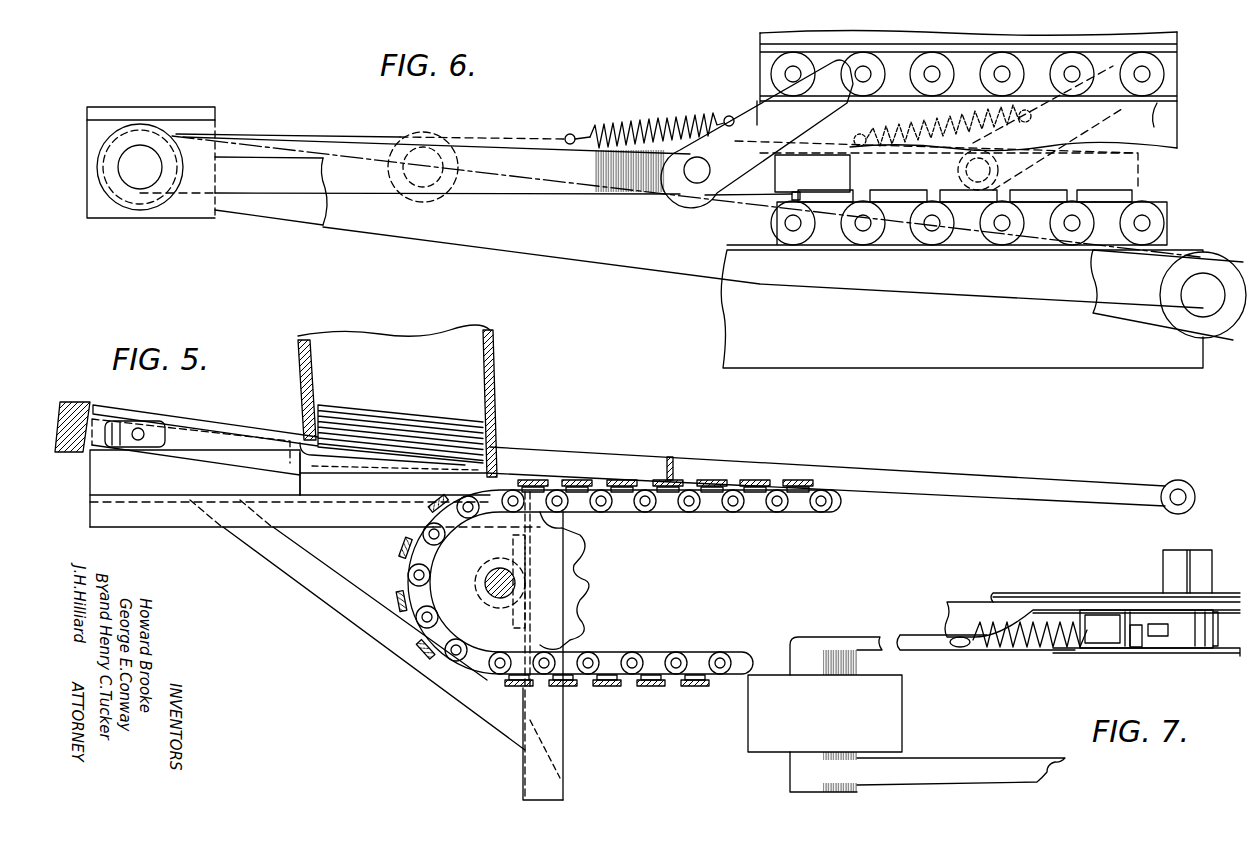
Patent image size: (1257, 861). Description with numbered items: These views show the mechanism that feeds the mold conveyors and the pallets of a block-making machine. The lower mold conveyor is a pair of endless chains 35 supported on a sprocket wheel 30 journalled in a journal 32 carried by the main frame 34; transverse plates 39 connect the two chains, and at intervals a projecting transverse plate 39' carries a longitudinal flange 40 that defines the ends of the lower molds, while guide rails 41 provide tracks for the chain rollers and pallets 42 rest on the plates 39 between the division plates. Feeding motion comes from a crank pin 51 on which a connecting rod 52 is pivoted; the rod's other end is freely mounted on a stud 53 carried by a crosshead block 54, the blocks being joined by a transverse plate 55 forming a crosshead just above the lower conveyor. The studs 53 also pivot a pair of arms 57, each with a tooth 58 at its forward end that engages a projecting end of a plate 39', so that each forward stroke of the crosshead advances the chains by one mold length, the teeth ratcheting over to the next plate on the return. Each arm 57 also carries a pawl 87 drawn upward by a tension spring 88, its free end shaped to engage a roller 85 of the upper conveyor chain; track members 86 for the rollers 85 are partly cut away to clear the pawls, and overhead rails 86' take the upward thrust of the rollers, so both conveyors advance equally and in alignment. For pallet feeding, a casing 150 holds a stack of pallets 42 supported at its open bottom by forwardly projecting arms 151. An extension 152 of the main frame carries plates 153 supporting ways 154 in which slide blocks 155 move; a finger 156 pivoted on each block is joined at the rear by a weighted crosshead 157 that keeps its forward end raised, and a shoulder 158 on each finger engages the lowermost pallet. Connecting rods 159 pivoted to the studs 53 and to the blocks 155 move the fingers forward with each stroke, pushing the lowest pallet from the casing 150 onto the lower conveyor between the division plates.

In FIG. 5, the sprocket wheel 30 is at (587, 580).
In FIG. 5, the journal 32 is at (498, 602).
In FIG. 5, the main frame 34 is at (563, 714).
In FIG. 5, the endless chain 35 is at (750, 505).
In FIG. 7, the endless chain 35 is at (1187, 652).
In FIG. 6, the transverse plate 39 is at (968, 184).
In FIG. 5, the transverse plate 39 is at (659, 571).
In FIG. 6, the transverse plate (lower division plate) 39' is at (962, 183).
In FIG. 5, the transverse plate (lower division plate) 39' is at (659, 574).
In FIG. 7, the transverse plate (lower division plate) 39' is at (1115, 589).
In FIG. 5, the longitudinal flange 40 is at (672, 468).
In FIG. 7, the longitudinal flange 40 is at (1190, 565).
In FIG. 6, the guide rail 41 is at (998, 357).
In FIG. 5, the pallet 42 is at (432, 412).
In FIG. 6, the crank pin 51 is at (1198, 305).
In FIG. 6, the connecting rod 52 is at (293, 212).
In FIG. 7, the connecting rod 52 is at (993, 770).
In FIG. 6, the stud 53 is at (142, 185).
In FIG. 6, the crosshead block 54 is at (89, 170).
In FIG. 6, the transverse plate (crosshead) 55 is at (134, 111).
In FIG. 6, the pusher arm 57 is at (304, 136).
In FIG. 7, the pusher arm 57 is at (907, 629).
In FIG. 6, the tooth 58 is at (787, 196).
In FIG. 6, the roller 85 is at (967, 126).
In FIG. 6, the track member 86 is at (957, 129).
In FIG. 7, the track member 86 is at (1092, 606).
In FIG. 6, the overhead rail 86' is at (933, 67).
In FIG. 6, the pawl 87 is at (748, 116).
In FIG. 7, the pawl 87 is at (1172, 628).
In FIG. 6, the tension spring 88 is at (663, 118).
In FIG. 7, the tension spring 88 is at (1010, 647).
In FIG. 5, the casing 150 is at (493, 370).
In FIG. 5, the forwardly projecting arm 151 is at (382, 457).
In FIG. 5, the frame extension 152 is at (187, 518).
In FIG. 5, the plate 153 is at (98, 483).
In FIG. 5, the way 154 is at (246, 462).
In FIG. 5, the slide block 155 is at (203, 412).
In FIG. 5, the finger 156 is at (237, 428).
In FIG. 5, the crosshead 157 is at (70, 404).
In FIG. 5, the shoulder 158 is at (303, 455).
In FIG. 5, the connecting rod 159 is at (550, 461).